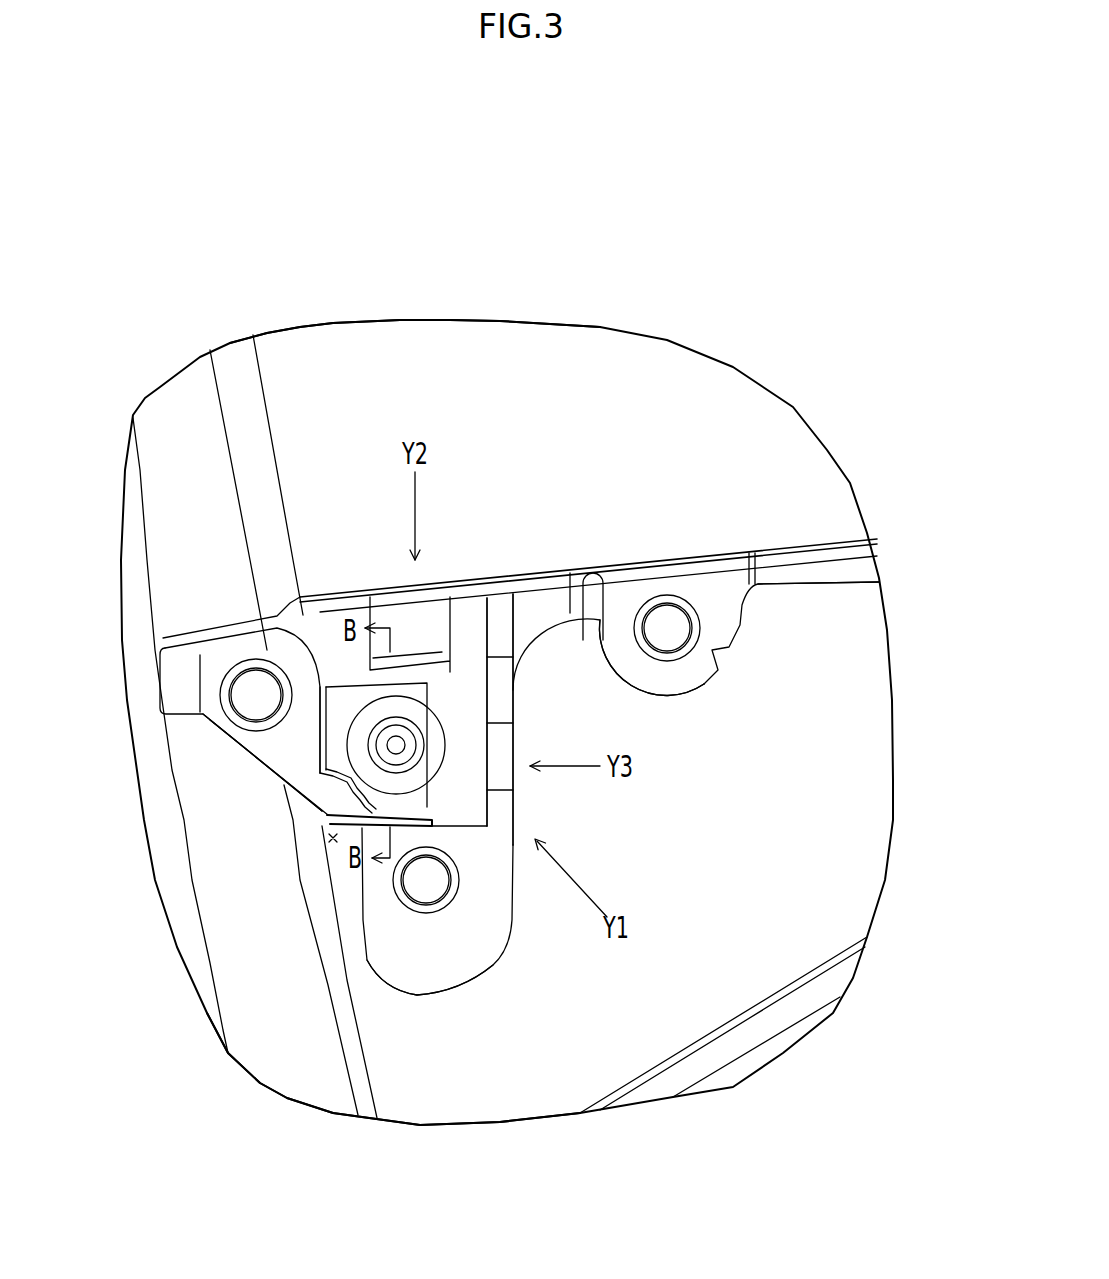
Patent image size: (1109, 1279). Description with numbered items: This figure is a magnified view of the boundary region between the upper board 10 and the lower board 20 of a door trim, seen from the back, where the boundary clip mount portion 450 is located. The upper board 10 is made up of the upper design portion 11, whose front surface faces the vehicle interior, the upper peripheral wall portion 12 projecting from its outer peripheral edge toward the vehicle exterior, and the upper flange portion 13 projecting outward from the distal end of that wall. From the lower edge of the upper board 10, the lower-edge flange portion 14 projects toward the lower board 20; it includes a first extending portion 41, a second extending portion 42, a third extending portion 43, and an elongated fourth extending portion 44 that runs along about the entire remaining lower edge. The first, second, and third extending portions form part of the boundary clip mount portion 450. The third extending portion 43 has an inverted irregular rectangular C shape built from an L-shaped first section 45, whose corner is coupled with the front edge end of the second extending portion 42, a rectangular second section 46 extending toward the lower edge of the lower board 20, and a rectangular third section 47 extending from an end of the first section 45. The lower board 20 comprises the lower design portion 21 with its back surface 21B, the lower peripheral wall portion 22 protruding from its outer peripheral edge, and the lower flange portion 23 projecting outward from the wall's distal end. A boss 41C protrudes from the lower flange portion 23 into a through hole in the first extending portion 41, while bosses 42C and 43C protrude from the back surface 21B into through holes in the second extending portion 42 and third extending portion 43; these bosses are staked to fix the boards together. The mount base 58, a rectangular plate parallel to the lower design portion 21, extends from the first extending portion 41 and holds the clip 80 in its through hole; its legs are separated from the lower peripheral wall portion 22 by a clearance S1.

The upper board 10 is at (787, 390).
The upper design portion 11 is at (316, 345).
The upper peripheral wall portion 12 is at (243, 375).
The upper flange portion 13 is at (185, 390).
The lower-edge flange portion 14 is at (820, 537).
The lower board 20 is at (903, 633).
The lower design portion 21 is at (430, 1113).
The back surface 21B is at (527, 1113).
The lower peripheral wall portion 22 is at (362, 1085).
The lower flange portion 23 is at (288, 1085).
The first extending portion 41 is at (228, 727).
The boss 41C is at (253, 698).
The second extending portion 42 is at (707, 607).
The boss 42C is at (665, 628).
The third extending portion 43 is at (520, 977).
The boss 43C is at (430, 888).
The fourth extending portion 44 is at (790, 580).
The first section 45 is at (502, 810).
The second section 46 is at (430, 618).
The third section 47 is at (422, 977).
The boundary clip mount portion 450 is at (220, 767).
The mount base 58 is at (333, 732).
The clip 80 is at (330, 842).
The clearance S1 is at (330, 841).